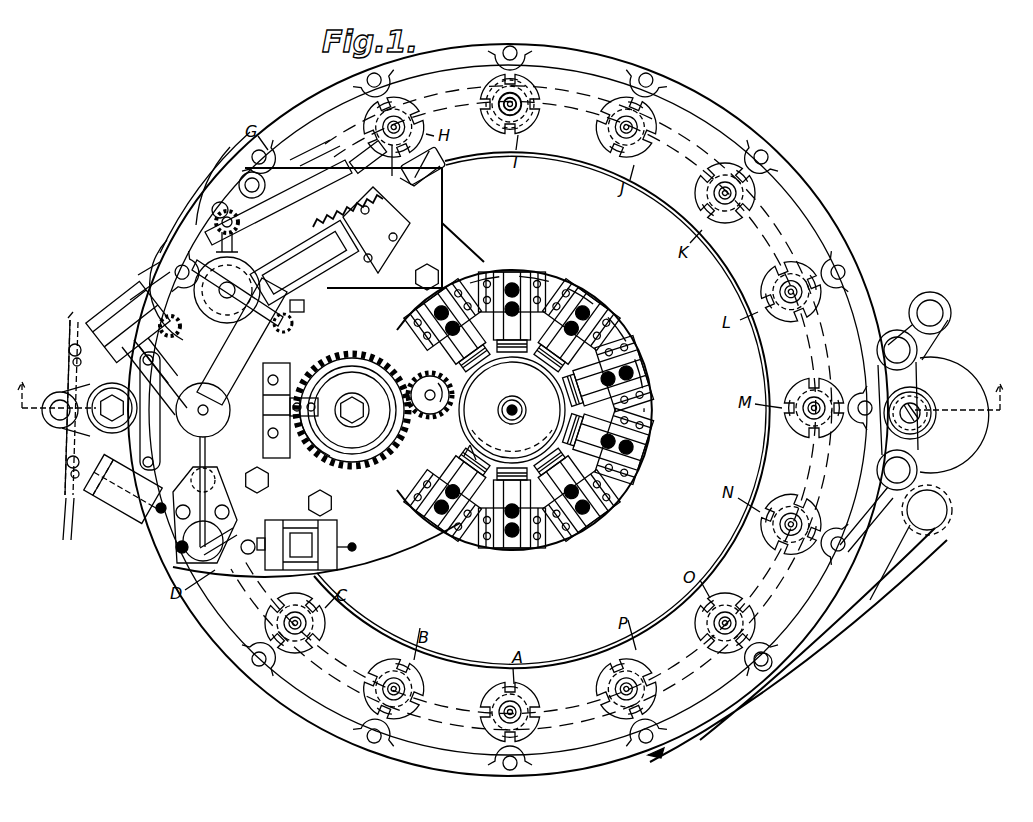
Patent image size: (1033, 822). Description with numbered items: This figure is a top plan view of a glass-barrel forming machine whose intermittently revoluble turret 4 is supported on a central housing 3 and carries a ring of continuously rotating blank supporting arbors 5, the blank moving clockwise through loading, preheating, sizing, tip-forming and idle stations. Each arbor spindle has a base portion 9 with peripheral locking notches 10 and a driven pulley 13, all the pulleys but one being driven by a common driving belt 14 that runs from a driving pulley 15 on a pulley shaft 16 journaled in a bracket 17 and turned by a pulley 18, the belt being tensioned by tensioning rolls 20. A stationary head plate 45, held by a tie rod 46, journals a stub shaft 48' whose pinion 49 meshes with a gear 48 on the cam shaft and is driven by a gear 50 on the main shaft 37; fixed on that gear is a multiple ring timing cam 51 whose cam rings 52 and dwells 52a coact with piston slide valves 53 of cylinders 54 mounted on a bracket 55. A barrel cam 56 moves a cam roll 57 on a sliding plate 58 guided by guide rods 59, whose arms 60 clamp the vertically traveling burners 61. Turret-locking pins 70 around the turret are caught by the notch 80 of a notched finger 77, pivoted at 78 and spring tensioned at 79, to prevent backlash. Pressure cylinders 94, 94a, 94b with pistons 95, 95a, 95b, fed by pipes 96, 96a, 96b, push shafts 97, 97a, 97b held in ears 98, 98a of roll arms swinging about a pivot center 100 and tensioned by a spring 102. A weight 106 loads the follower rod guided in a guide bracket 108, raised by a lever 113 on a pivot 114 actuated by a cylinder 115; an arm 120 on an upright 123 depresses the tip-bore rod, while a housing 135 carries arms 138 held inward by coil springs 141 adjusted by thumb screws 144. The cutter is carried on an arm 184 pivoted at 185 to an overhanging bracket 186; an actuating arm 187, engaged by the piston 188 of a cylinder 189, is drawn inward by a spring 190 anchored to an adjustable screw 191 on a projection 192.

The central housing 3 is at (510, 384).
The turret 4 is at (440, 107).
The blank supporting arbor 5 is at (522, 90).
The base portion 9 is at (530, 120).
The locking notch 10 is at (712, 174).
The driven pulley 13 is at (535, 112).
The driving belt 14 is at (845, 520).
The driving pulley 15 is at (932, 426).
The pulley shaft 16 is at (922, 408).
The bracket 17 is at (935, 335).
The pulley 18 is at (965, 440).
The tensioning roll 20 is at (915, 350).
The main shaft 37 is at (500, 406).
The head plate 45 is at (477, 235).
The tie rod 46 is at (50, 425).
The gear 48 is at (339, 442).
The stub shaft 48' is at (429, 407).
The pinion 49 is at (424, 375).
The gear 50 is at (458, 445).
The multiple ring timing cam 51 is at (494, 416).
The cam ring 52 is at (530, 455).
The dwell 52a is at (638, 460).
The piston slide valve 53 is at (470, 360).
The cylinder 54 is at (528, 290).
The bracket 55 is at (645, 430).
The barrel cam 56 is at (365, 356).
The cam roll 57 is at (346, 422).
The sliding plate 58 is at (330, 466).
The guide rod 59 is at (302, 368).
The arm 60 is at (268, 368).
The burner 61 is at (158, 362).
The turret-locking pin 70 is at (520, 50).
The notched finger 77 is at (840, 615).
The pivot 78 is at (932, 516).
The spring 79 is at (952, 512).
The notch 80 is at (776, 664).
The pressure cylinder 94 is at (118, 300).
The pressure cylinder 94a is at (112, 516).
The pressure cylinder 94b is at (312, 540).
The piston 95 is at (72, 318).
The piston 95a is at (66, 502).
The piston 95b is at (262, 538).
The pipe 96 is at (168, 290).
The pipe 96a is at (160, 514).
The pipe 96b is at (356, 546).
The shaft 97 is at (68, 350).
The shaft 97a is at (67, 462).
The shaft 97b is at (255, 554).
The ear 98 is at (72, 362).
The ear 98a is at (70, 476).
The pivot center 100 is at (115, 392).
The spring 102 is at (68, 320).
The weight 106 is at (238, 380).
The guide bracket 108 is at (294, 322).
The lever 113 is at (180, 560).
The pivot 114 is at (143, 488).
The cylinder 115 is at (200, 556).
The arm 120 is at (297, 308).
The upright 123 is at (336, 232).
The housing 135 is at (212, 247).
The arm 138 is at (215, 220).
The coil spring 141 is at (272, 200).
The thumb screw 144 is at (222, 195).
The arm 184 is at (212, 205).
The pivot 185 is at (242, 168).
The overhanging bracket 186 is at (440, 188).
The actuating arm 187 is at (336, 166).
The piston 188 is at (414, 276).
The cylinder 189 is at (398, 232).
The spring 190 is at (348, 196).
The adjustable screw 191 is at (370, 166).
The projection 192 is at (436, 202).